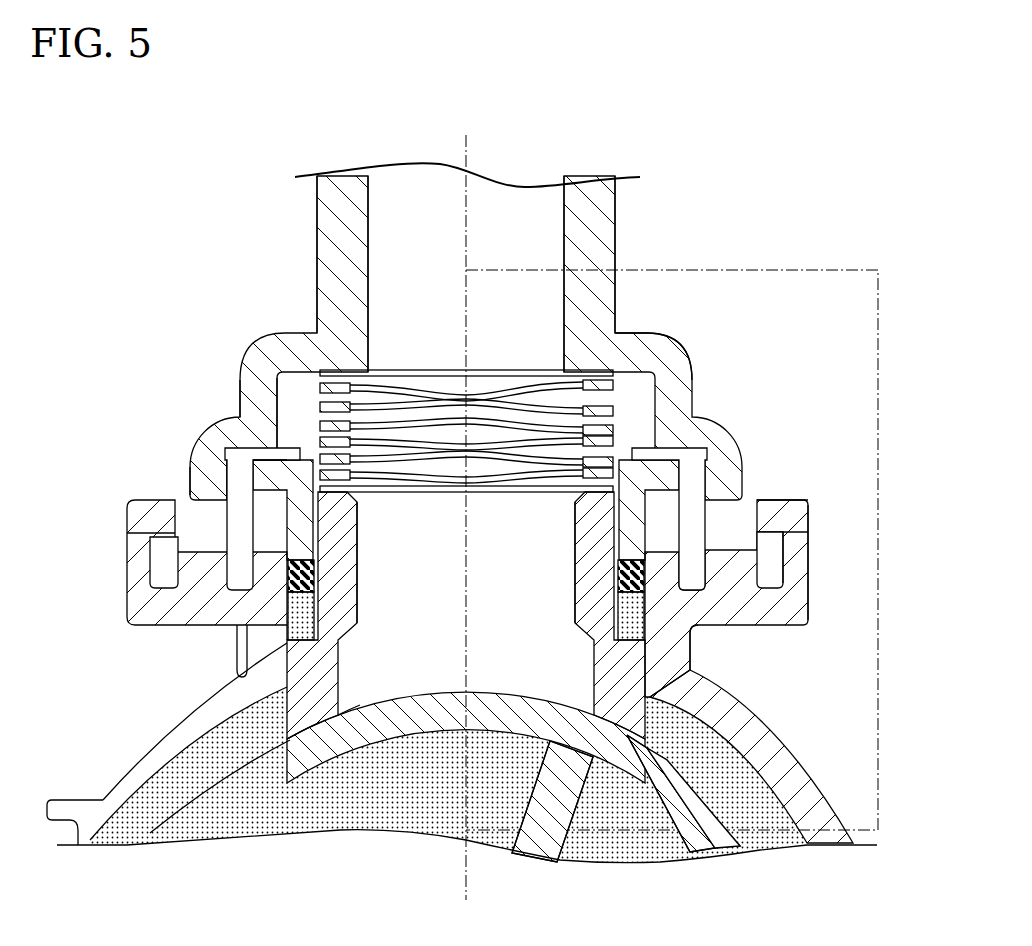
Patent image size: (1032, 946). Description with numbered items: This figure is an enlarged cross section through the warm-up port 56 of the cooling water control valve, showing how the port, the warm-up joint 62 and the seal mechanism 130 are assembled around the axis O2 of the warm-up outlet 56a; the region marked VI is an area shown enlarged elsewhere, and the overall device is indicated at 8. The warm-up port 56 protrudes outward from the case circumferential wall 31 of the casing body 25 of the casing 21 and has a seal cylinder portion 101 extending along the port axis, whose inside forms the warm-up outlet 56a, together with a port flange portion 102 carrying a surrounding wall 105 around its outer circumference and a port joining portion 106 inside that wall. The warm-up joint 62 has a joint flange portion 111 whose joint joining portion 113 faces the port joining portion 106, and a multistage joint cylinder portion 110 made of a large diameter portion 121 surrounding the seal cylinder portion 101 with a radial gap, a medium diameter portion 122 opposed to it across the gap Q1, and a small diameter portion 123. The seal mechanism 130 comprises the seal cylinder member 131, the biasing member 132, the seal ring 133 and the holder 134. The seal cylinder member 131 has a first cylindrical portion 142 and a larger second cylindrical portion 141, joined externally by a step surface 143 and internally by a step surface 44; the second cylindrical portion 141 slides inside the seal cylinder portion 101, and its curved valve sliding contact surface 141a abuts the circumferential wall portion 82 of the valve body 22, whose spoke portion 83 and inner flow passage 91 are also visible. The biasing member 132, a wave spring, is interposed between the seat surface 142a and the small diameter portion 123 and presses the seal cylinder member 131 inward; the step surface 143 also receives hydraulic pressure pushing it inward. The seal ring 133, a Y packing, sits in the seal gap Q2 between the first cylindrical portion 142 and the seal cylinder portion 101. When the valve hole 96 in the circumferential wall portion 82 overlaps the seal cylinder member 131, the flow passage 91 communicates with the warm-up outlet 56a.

The valve device 8 is at (770, 176).
The casing 21 is at (132, 744).
The valve body 22 is at (760, 756).
The casing body 25 is at (830, 842).
The case circumferential wall 31 is at (481, 884).
The step surface 44 is at (466, 568).
The warm-up port 56 is at (530, 704).
The warm-up outlet 56a is at (683, 862).
The warm-up joint 62 is at (622, 240).
The circumferential wall portion 82 is at (740, 800).
The spoke portion 83 is at (540, 855).
The flow passage 91 is at (436, 803).
The valve hole 96 is at (287, 737).
The seal cylinder portion 101 is at (730, 540).
The port flange portion 102 is at (760, 617).
The surrounding wall 105 is at (802, 574).
The port joining portion 106 is at (760, 570).
The joint cylinder portion 110 is at (78, 243).
The joint flange portion 111 is at (812, 520).
The joint joining portion 113 is at (800, 518).
The large diameter portion 121 is at (197, 472).
The medium diameter portion 122 is at (250, 375).
The small diameter portion 123 is at (322, 258).
The seal mechanism 130 is at (538, 412).
The seal cylinder member 131 is at (318, 735).
The biasing member 132 is at (600, 372).
The seal ring 133 is at (290, 575).
The holder 134 is at (696, 466).
The second cylindrical portion 141 is at (372, 765).
The valve sliding contact surface 141a is at (352, 760).
The first cylindrical portion 142 is at (350, 545).
The seat surface 142a is at (315, 487).
The step surface 143 is at (283, 642).
The axis of the warm-up outlet O2 is at (474, 141).
The gap Q1 is at (265, 470).
The seal gap Q2 is at (275, 620).
The section indicator VI is at (810, 270).